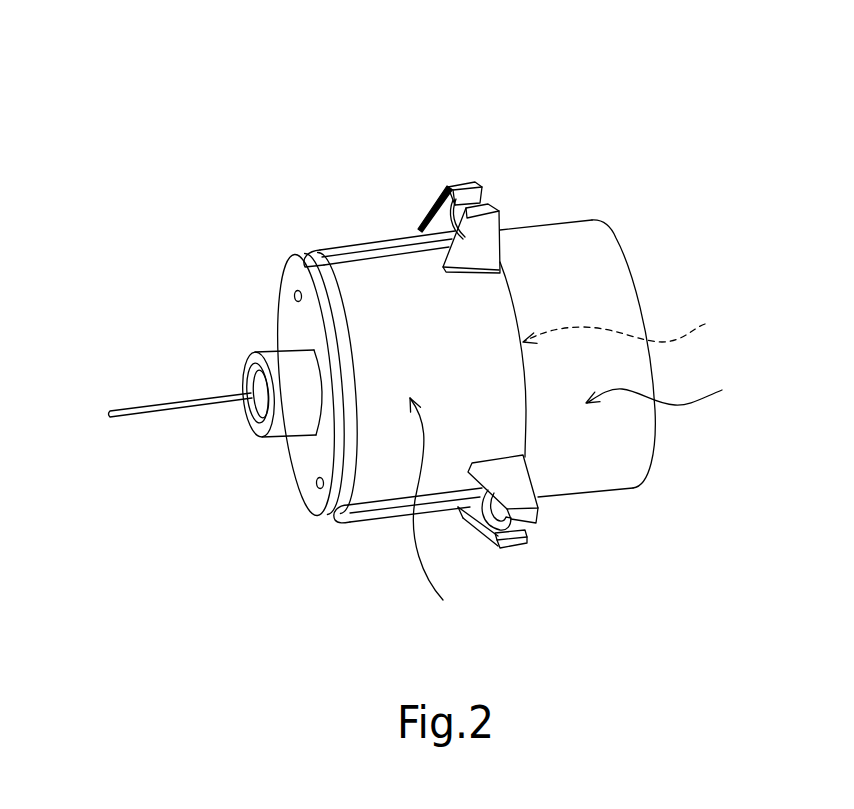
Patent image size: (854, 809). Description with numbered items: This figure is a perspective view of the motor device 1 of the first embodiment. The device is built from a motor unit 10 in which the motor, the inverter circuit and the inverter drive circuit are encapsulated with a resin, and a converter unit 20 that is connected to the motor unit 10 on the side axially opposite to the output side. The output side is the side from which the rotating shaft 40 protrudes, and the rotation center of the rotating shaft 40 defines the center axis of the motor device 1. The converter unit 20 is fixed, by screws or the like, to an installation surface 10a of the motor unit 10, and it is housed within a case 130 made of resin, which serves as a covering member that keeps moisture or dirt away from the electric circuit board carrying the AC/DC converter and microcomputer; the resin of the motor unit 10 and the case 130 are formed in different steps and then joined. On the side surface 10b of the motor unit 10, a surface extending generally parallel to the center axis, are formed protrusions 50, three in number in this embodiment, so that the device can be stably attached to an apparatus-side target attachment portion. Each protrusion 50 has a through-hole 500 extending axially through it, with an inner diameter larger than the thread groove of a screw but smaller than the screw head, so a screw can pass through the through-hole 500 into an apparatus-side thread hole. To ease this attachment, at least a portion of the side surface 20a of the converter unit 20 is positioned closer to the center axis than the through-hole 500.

The motor device 1 is at (417, 64).
The motor unit 10 is at (357, 288).
The installation surface 10a is at (635, 321).
The side surface 10b is at (446, 512).
The converter unit 20 is at (560, 238).
The side surface of the converter unit 20a is at (677, 388).
The case 130 is at (629, 256).
The rotating shaft 40 is at (158, 408).
The protrusion 50 is at (465, 182).
The through-hole 500 is at (462, 220).